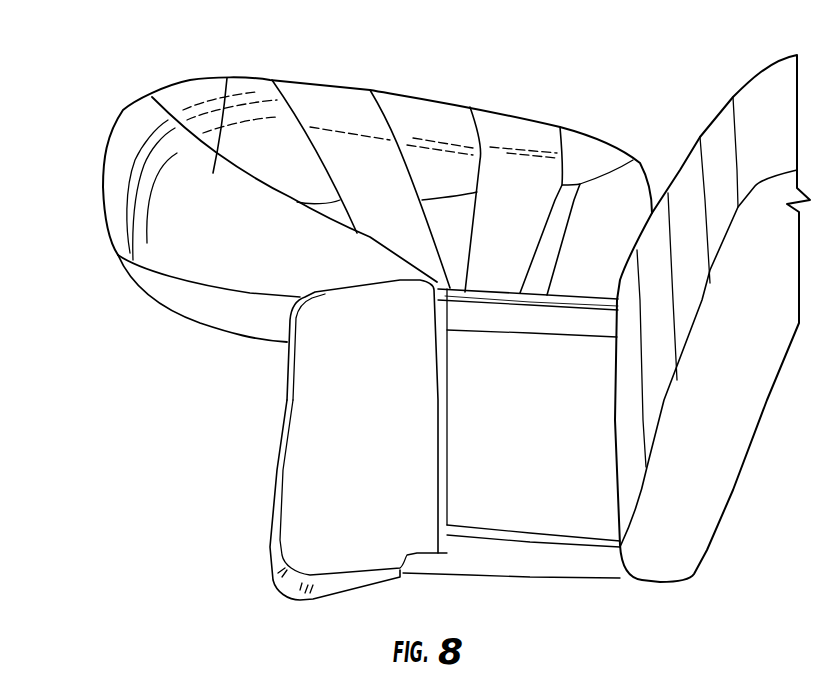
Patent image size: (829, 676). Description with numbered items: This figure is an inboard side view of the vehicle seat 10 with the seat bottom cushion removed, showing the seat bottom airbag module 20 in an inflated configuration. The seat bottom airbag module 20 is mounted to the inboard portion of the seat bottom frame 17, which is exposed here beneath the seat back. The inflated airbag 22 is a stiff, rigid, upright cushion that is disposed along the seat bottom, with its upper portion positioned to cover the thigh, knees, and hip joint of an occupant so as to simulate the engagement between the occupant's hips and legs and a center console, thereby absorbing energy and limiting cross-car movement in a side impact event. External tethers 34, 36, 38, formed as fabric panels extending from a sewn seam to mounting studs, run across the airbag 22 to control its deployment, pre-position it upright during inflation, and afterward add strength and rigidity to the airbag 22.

The vehicle seat 10 is at (562, 78).
The seat bottom frame 17 is at (517, 323).
The seat bottom airbag module 20 is at (62, 207).
The airbag 22 is at (165, 285).
The external tether 34 is at (227, 78).
The external tether 36 is at (353, 120).
The external tether 38 is at (500, 147).